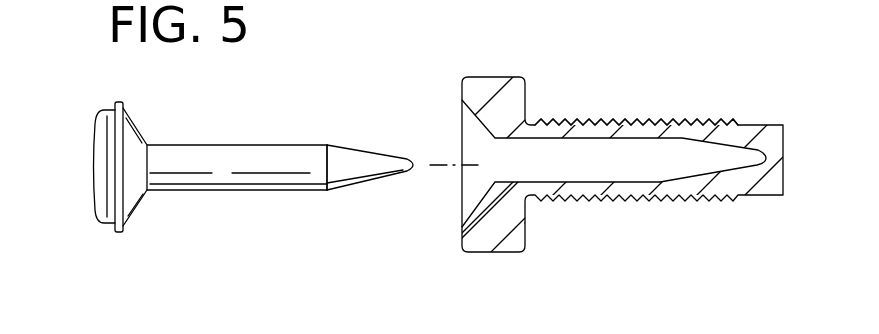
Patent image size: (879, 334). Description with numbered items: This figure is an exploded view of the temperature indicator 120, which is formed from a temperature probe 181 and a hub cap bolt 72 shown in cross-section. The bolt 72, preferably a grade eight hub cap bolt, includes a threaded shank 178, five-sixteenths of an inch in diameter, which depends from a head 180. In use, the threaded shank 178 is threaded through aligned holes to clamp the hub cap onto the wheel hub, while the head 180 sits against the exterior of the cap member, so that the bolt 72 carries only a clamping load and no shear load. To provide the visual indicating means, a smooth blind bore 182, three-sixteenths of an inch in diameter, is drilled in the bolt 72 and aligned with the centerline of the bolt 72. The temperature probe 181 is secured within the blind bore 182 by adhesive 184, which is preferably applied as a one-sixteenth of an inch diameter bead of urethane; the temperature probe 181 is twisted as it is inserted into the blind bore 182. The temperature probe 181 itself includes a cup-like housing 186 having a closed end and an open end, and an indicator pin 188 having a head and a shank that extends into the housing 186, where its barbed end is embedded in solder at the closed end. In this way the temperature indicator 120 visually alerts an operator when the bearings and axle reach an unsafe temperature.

The bolt 72 is at (610, 118).
The temperature indicator 120 is at (352, 137).
The threaded shank 178 is at (700, 120).
The head 180 is at (523, 233).
The temperature probe 181 is at (188, 145).
The blind bore 182 is at (633, 178).
The adhesive 184 is at (326, 145).
The housing 186 is at (282, 190).
The indicator pin 188 is at (96, 198).